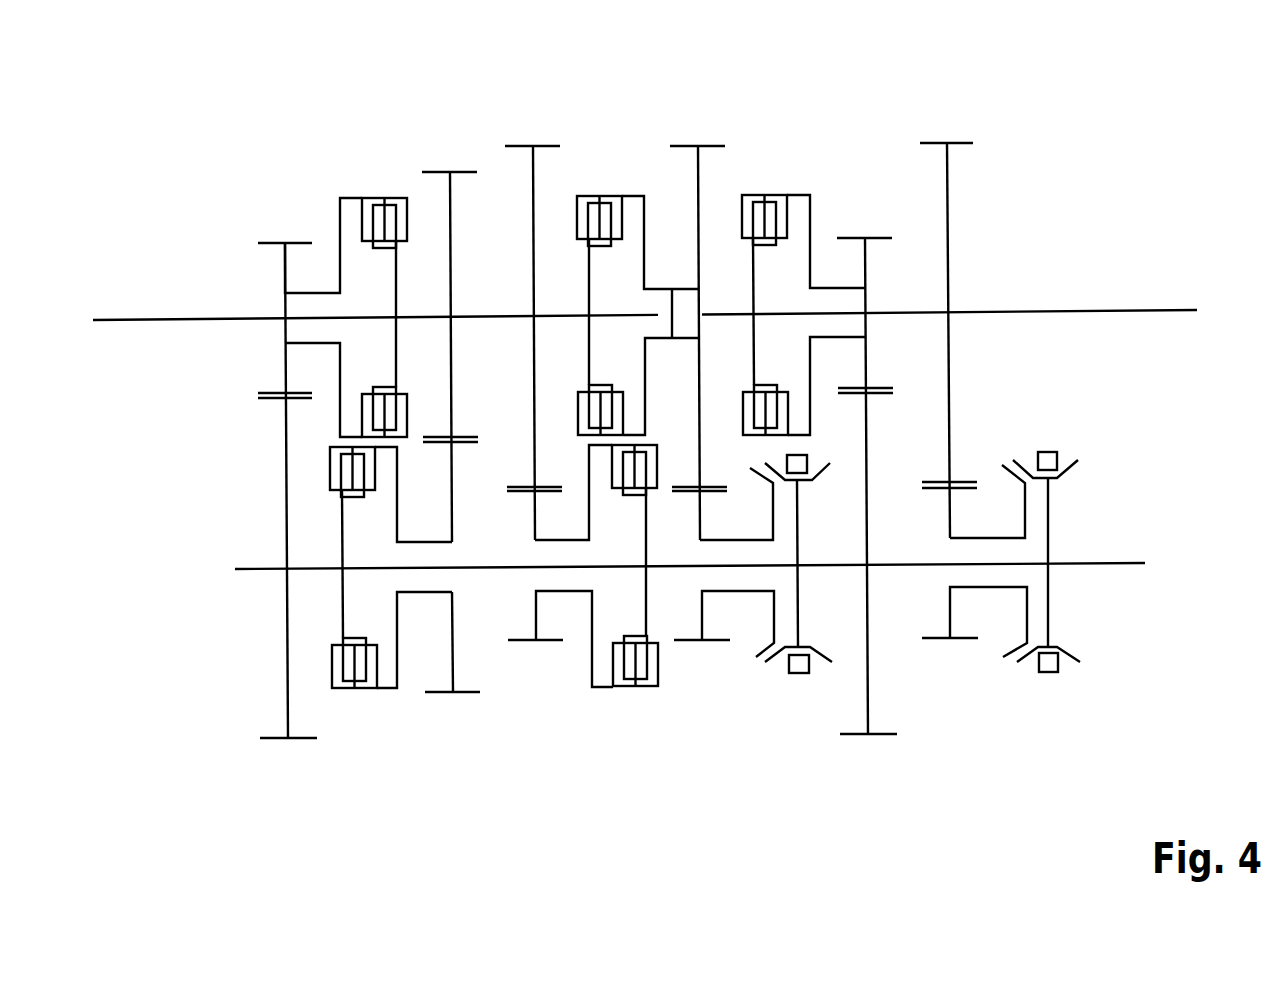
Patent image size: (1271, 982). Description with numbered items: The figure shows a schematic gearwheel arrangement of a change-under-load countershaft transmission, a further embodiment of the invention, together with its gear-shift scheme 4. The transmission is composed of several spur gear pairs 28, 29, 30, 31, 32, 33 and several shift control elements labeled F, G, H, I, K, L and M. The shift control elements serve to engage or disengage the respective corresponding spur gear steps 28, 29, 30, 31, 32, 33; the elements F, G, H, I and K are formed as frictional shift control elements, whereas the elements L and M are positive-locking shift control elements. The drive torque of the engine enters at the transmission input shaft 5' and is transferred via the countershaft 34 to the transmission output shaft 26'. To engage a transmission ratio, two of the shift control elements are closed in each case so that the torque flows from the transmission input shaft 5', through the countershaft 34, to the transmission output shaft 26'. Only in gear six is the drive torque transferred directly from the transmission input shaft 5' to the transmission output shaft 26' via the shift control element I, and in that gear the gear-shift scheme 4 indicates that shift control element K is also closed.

The gear-shift scheme 4 is at (156, 157).
The transmission input shaft 5' is at (189, 390).
The transmission output shaft 26' is at (741, 262).
The spur gear pair 28 is at (284, 243).
The spur gear pair 29 is at (440, 172).
The spur gear pair 30 is at (522, 146).
The spur gear pair 31 is at (692, 146).
The spur gear pair 32 is at (857, 238).
The spur gear pair 33 is at (942, 143).
The countershaft 34 is at (1125, 563).